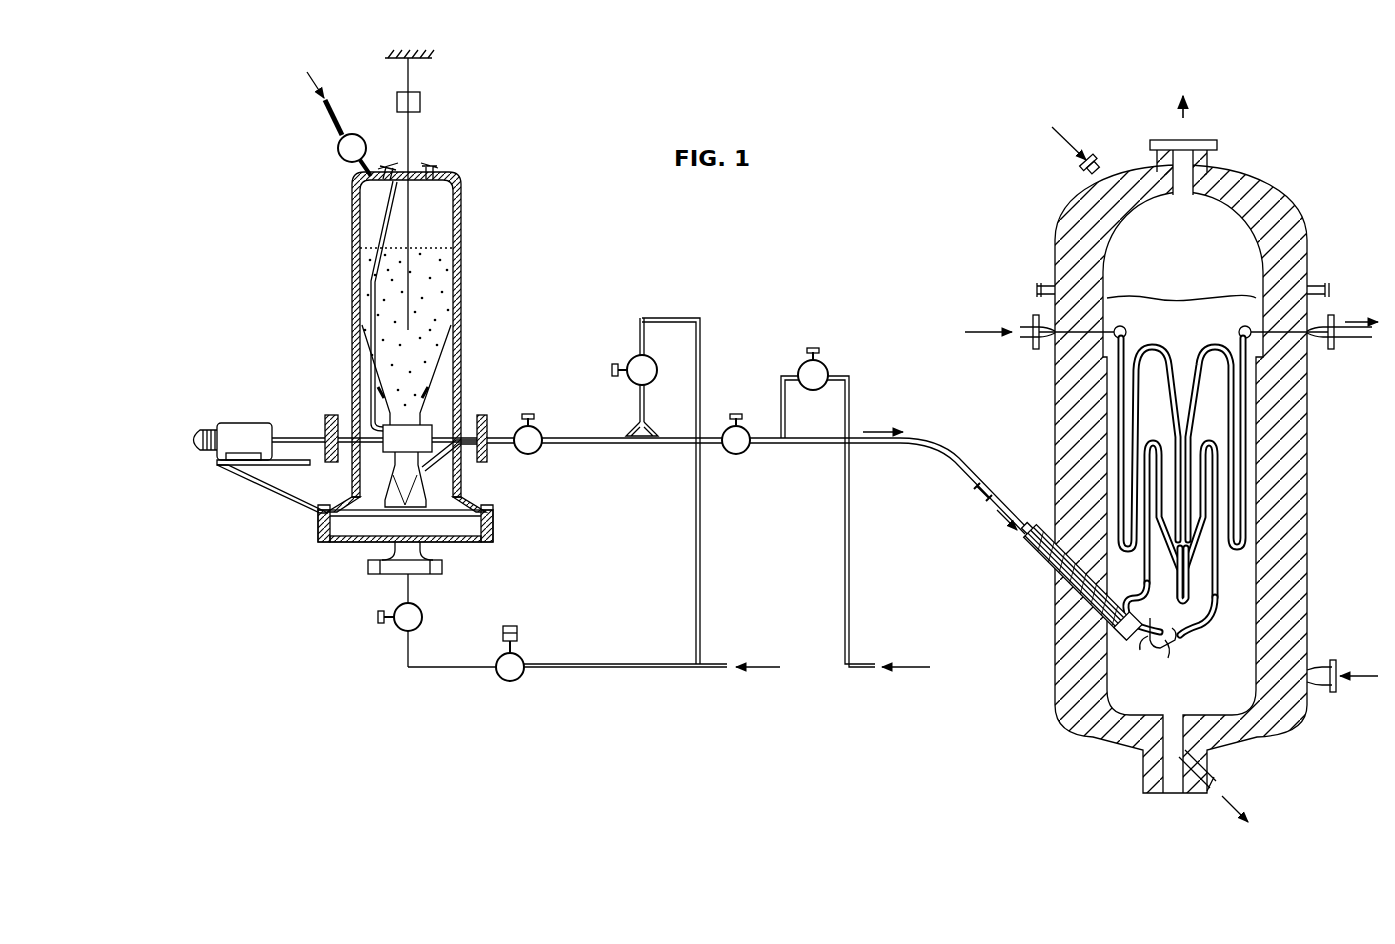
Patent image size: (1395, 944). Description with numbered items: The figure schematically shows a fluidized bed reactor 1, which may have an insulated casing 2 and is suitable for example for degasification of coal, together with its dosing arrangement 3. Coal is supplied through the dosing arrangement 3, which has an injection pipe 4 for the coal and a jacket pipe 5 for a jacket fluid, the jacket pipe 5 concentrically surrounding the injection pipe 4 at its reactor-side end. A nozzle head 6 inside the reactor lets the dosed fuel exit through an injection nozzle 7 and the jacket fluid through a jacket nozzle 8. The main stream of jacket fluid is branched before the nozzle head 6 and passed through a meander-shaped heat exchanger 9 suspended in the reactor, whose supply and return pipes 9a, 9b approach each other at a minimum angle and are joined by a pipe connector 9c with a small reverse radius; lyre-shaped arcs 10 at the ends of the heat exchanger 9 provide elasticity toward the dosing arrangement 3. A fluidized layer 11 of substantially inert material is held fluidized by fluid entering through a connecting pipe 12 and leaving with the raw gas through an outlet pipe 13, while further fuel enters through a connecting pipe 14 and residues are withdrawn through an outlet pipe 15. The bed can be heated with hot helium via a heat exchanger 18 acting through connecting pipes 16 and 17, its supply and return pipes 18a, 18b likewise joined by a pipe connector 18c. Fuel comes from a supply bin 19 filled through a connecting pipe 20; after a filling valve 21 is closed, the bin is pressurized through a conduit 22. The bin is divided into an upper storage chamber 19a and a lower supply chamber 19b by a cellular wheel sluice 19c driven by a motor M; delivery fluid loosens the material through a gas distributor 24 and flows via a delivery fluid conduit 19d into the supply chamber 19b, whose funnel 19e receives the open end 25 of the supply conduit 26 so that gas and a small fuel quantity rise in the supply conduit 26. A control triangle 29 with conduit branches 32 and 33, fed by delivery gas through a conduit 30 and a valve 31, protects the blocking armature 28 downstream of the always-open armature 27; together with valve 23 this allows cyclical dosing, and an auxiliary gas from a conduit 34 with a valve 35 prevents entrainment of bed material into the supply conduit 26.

The fluidized bed reactor 1 is at (1171, 459).
The insulated casing 2 is at (1290, 398).
The dosing arrangement 3 is at (1037, 559).
The injection pipe 4 is at (1075, 610).
The jacket pipe 5 is at (1066, 588).
The nozzle head 6 is at (1118, 630).
The injection nozzle 7 is at (1158, 655).
The jacket nozzle 8 is at (1140, 648).
The meander-shaped heat exchanger 9 is at (1232, 523).
The supply pipe 9a is at (1185, 570).
The return pipe 9b is at (1188, 545).
The pipe connector 9c is at (1210, 612).
The lyre-shaped arcs 10 is at (1162, 636).
The fluidized layer 11 is at (1186, 316).
The connecting pipe 12 is at (1330, 694).
The outlet pipe 13 is at (1215, 147).
The connecting pipe 14 is at (1080, 172).
The outlet pipe 15 is at (1215, 775).
The connecting pipe 16 is at (1033, 324).
The connecting pipe 17 is at (1333, 324).
The heat exchanger 18 is at (1112, 392).
The supply pipe 18a is at (1120, 500).
The return pipe 18b is at (1125, 475).
The pipe connector 18c is at (1118, 530).
The supply bin 19 is at (462, 186).
The upper storage chamber 19a is at (428, 265).
The lower supply chamber 19b is at (425, 468).
The sluice 19c is at (432, 430).
The delivery fluid conduit 19d is at (372, 370).
The funnel 19e is at (385, 505).
The connecting pipe 20 is at (335, 118).
The filling valve 21 is at (345, 165).
The conduit 22 is at (412, 590).
The valve 23 is at (518, 658).
The gas distributor 24 is at (432, 392).
The open end 25 is at (440, 488).
The supply conduit 26 is at (804, 448).
The armature 27 is at (538, 430).
The armature 28 is at (746, 430).
The control triangle 29 is at (641, 449).
The conduit 30 is at (700, 548).
The valve 31 is at (633, 358).
The conduit branch 32 is at (632, 432).
The conduit branch 33 is at (652, 432).
The conduit 34 is at (847, 548).
The valve 35 is at (812, 388).
The motor M is at (243, 430).